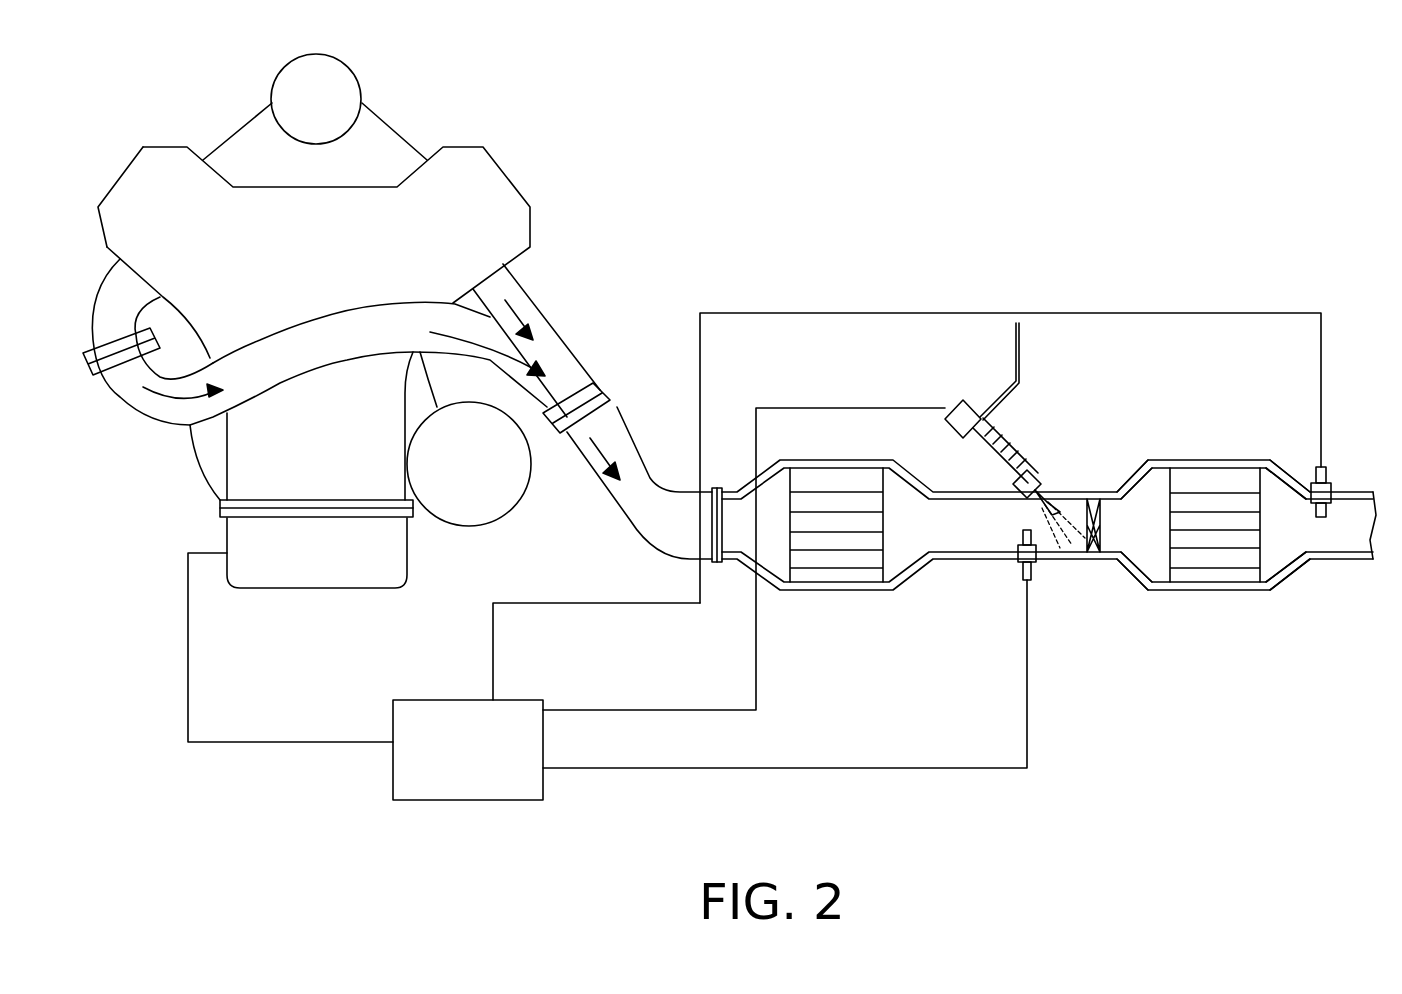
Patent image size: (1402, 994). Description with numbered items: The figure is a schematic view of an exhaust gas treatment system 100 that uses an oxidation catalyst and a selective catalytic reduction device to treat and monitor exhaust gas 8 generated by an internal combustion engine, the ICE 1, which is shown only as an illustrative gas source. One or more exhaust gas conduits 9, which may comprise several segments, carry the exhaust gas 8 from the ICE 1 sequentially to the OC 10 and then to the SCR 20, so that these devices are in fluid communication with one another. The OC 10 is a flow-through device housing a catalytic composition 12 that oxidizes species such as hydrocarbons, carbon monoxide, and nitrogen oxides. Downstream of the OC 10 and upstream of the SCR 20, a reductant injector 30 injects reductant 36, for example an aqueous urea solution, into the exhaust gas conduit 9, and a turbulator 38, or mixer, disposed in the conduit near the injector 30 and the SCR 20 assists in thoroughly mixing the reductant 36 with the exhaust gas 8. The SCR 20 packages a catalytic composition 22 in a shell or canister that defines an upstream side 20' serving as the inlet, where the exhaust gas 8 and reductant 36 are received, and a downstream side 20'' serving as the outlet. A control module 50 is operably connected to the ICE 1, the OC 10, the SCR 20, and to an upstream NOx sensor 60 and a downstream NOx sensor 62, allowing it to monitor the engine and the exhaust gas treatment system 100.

The internal combustion engine (ICE) 1 is at (467, 143).
The exhaust gas 8 is at (590, 443).
The exhaust gas conduit 9 is at (557, 317).
The oxidation catalyst (OC) 10 is at (1044, 550).
The catalytic composition of the OC 12 is at (833, 483).
The selective catalytic reduction device (SCR) 20 is at (1213, 509).
The upstream side of the SCR 20' is at (1155, 552).
The downstream side of the SCR 20'' is at (1272, 552).
The catalytic composition of the SCR 22 is at (1225, 483).
The reductant injector 30 is at (1007, 447).
The reductant 36 is at (1060, 497).
The turbulator (mixer) 38 is at (1097, 537).
The control module 50 is at (418, 697).
The upstream NOx sensor 60 is at (1037, 567).
The downstream NOx sensor 62 is at (1327, 467).
The exhaust gas treatment system 100 is at (1302, 236).